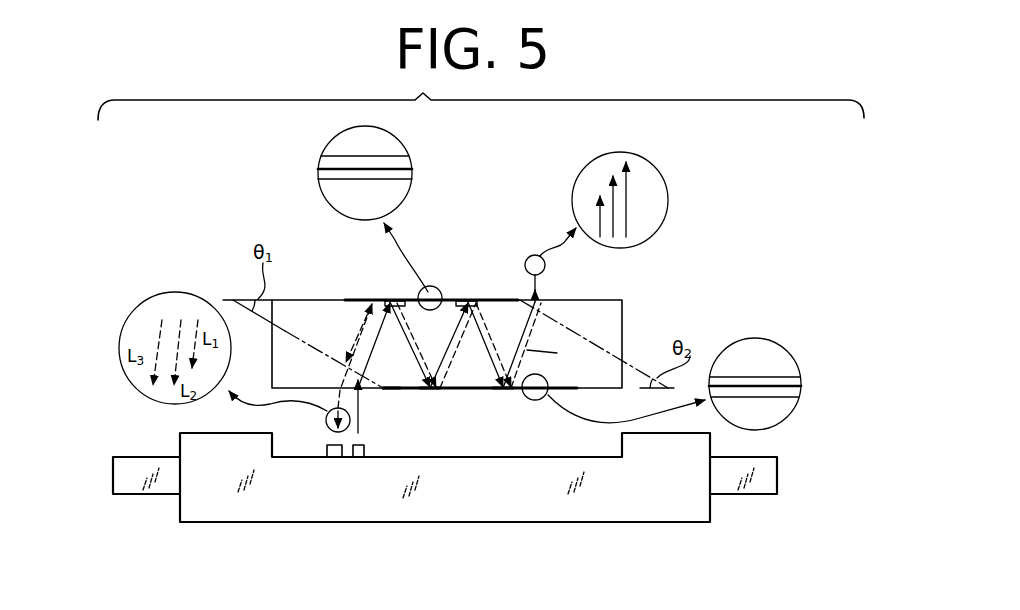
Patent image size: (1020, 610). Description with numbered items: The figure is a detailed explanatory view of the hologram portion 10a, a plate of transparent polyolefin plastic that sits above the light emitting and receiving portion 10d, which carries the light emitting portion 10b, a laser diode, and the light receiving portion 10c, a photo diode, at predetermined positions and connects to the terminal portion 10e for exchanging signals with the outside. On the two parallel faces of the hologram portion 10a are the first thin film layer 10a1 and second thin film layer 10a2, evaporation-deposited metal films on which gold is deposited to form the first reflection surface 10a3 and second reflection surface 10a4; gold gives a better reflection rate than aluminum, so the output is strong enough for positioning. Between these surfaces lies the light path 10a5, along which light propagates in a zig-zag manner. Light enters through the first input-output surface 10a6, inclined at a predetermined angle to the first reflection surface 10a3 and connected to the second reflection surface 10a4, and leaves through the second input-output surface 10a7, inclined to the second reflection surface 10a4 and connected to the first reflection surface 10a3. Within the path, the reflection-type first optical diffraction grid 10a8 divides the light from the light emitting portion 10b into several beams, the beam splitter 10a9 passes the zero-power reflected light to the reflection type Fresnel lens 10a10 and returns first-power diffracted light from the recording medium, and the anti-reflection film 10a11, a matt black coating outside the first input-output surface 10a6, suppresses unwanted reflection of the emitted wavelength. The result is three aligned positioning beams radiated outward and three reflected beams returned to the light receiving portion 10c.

The hologram portion 10a is at (623, 312).
The first thin film layer 10a1 is at (320, 170).
The second thin film layer 10a2 is at (798, 381).
The first reflection surface 10a3 is at (430, 287).
The second reflection surface 10a4 is at (540, 400).
The light path 10a5 is at (557, 353).
The first input-output surface 10a6 is at (383, 390).
The second input-output surface 10a7 is at (530, 300).
The first optical diffraction grid 10a8 is at (393, 300).
The beam splitter 10a9 is at (503, 390).
The reflection type Fresnel lens 10a10 is at (467, 300).
The anti-reflection film 10a11 is at (430, 392).
The light emitting portion 10b is at (360, 458).
The light receiving portion 10c is at (335, 458).
The light emitting and receiving portion 10d is at (595, 503).
The terminal portion 10e is at (128, 481).